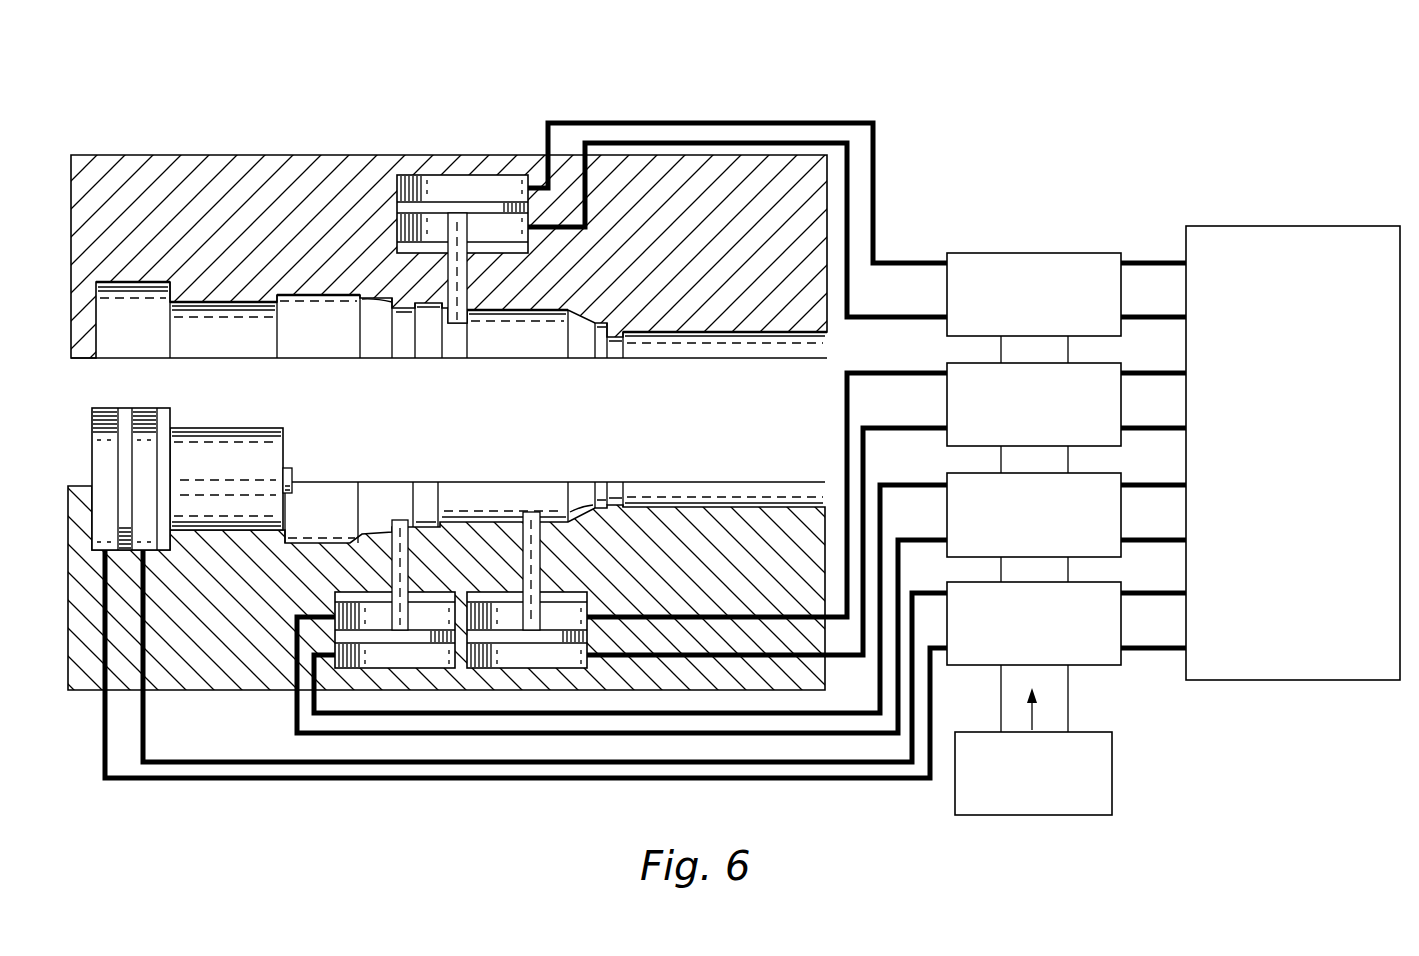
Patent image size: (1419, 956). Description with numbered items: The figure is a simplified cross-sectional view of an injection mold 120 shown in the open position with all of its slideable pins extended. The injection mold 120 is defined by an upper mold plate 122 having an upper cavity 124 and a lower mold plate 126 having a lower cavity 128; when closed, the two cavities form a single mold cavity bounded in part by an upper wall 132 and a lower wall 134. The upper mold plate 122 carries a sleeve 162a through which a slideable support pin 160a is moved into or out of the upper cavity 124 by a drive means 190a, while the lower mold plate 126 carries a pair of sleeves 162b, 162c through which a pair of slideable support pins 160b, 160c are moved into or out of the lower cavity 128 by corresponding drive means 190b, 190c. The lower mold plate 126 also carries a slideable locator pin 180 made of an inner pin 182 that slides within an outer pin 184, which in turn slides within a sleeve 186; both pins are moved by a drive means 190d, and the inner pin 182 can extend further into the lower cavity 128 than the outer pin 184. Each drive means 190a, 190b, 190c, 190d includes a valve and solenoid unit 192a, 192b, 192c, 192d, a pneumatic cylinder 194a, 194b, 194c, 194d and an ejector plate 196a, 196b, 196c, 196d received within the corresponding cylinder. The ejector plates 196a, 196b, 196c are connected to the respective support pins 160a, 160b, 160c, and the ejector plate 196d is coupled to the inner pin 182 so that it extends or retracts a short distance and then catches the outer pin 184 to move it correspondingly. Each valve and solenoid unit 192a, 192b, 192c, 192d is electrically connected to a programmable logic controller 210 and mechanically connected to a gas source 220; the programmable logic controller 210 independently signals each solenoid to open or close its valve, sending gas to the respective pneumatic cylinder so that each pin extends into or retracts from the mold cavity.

The injection mold 120 is at (967, 175).
The upper mold plate 122 is at (190, 227).
The upper cavity 124 is at (534, 346).
The lower mold plate 126 is at (207, 620).
The lower cavity 128 is at (577, 455).
The upper wall 132 is at (293, 304).
The lower wall 134 is at (296, 542).
The slideable support pin 160a is at (462, 325).
The slideable support pin 160b is at (532, 512).
The slideable support pin 160c is at (400, 520).
The sleeve 162a is at (457, 330).
The sleeve 162b is at (541, 552).
The sleeve 162c is at (409, 562).
The slideable locator pin 180 is at (266, 445).
The inner pin 182 is at (294, 470).
The outer pin 184 is at (289, 452).
The sleeve 186 is at (268, 427).
The drive means 190a is at (389, 171).
The drive means 190b is at (589, 694).
The drive means 190c is at (327, 698).
The drive means 190d is at (134, 454).
The valve and solenoid unit 192a is at (1010, 253).
The valve and solenoid unit 192b is at (960, 363).
The valve and solenoid unit 192c is at (960, 473).
The valve and solenoid unit 192d is at (1092, 665).
The pneumatic cylinder 194a is at (430, 190).
The pneumatic cylinder 194b is at (588, 644).
The pneumatic cylinder 194c is at (337, 648).
The pneumatic cylinder 194d is at (103, 443).
The ejector plate 196a is at (397, 247).
The ejector plate 196b is at (588, 597).
The ejector plate 196c is at (337, 600).
The ejector plate 196d is at (208, 384).
The programmable logic controller 210 is at (1280, 226).
The gas source 220 is at (1112, 793).